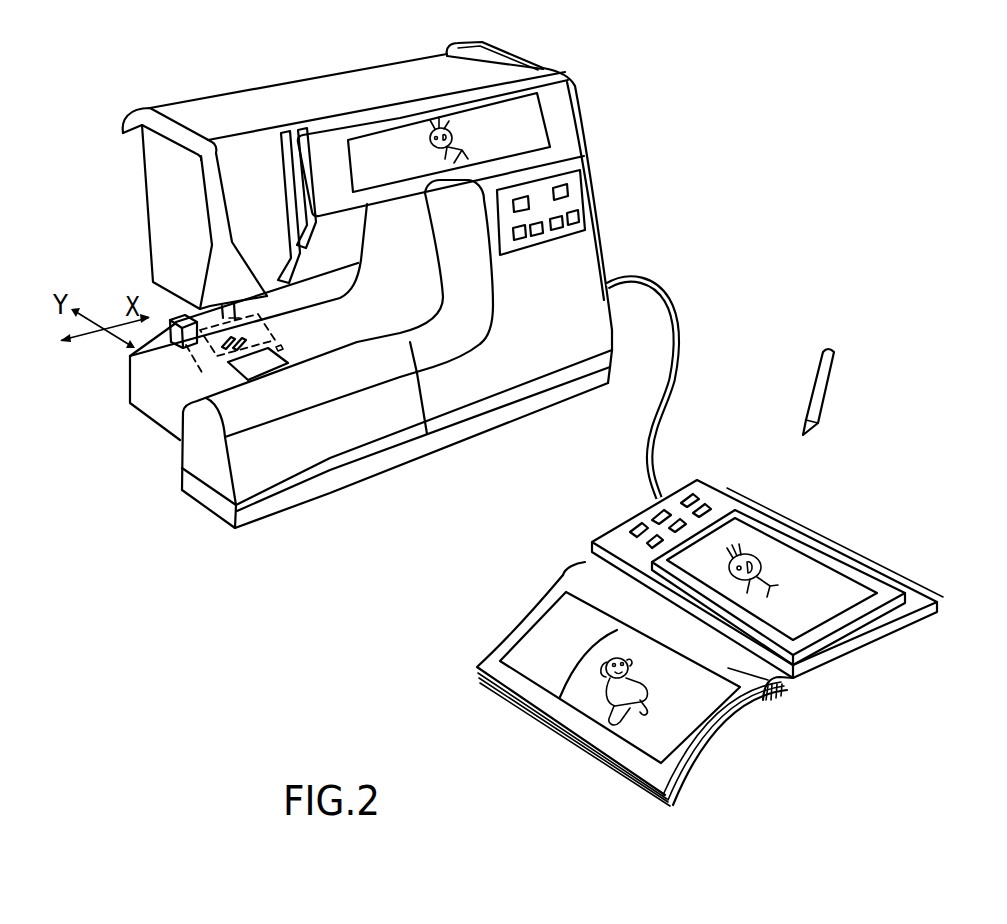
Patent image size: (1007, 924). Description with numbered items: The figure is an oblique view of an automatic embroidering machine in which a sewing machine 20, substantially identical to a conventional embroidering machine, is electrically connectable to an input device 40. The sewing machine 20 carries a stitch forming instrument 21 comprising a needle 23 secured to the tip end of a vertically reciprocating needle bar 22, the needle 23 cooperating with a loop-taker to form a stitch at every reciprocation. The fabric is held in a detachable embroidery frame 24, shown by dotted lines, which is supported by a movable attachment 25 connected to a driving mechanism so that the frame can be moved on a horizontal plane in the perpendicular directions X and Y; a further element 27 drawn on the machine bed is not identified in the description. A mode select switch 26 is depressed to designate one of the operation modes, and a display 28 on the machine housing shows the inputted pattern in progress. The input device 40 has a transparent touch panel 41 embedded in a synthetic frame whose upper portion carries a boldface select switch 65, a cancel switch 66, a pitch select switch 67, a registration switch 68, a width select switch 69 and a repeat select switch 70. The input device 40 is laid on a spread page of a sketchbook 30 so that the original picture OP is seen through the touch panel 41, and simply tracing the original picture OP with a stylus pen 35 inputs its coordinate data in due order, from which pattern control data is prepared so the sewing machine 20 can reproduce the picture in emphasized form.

The sewing machine 20 is at (352, 68).
The stitch forming instrument 21 is at (272, 328).
The needle bar 22 is at (238, 306).
The needle 23 is at (248, 315).
The embroidery frame 24 is at (197, 369).
The movable attachment 25 is at (177, 313).
The mode select switch 26 is at (568, 190).
The slide plate 27 is at (246, 362).
The display 28 is at (540, 130).
The sketchbook 30 is at (538, 591).
The stylus pen 35 is at (825, 383).
The input device 40 is at (781, 521).
The transparent touch panel 41 is at (800, 578).
The boldface select switch 65 is at (703, 503).
The cancel switch 66 is at (676, 519).
The pitch select switch 67 is at (612, 532).
The registration switch 68 is at (633, 525).
The width select switch 69 is at (656, 510).
The repeat select switch 70 is at (690, 494).
The original picture OP is at (753, 552).